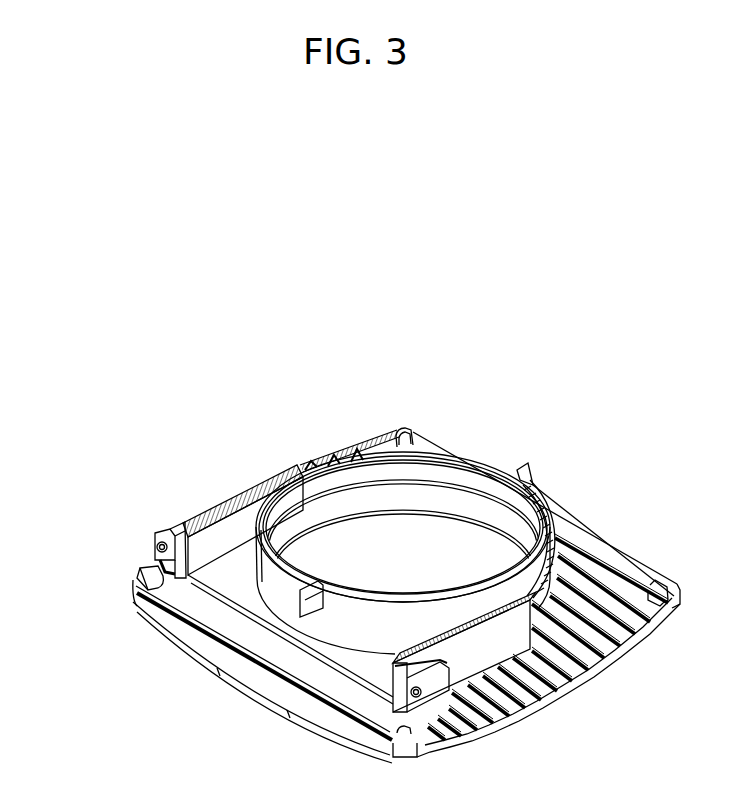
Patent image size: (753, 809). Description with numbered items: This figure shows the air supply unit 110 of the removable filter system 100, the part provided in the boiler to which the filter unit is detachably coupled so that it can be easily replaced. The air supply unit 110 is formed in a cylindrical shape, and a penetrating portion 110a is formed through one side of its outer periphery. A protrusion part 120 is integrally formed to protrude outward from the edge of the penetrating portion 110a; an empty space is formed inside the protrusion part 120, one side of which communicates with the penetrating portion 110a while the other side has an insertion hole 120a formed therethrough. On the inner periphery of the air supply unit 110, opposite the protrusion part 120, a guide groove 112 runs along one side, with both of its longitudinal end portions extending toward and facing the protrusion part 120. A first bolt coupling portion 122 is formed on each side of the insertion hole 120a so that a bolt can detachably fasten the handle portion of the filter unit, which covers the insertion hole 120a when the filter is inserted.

The removable filter system 100 is at (285, 332).
The air supply unit 110 is at (392, 538).
The penetrating portion 110a is at (292, 633).
The guide groove 112 is at (298, 498).
The protrusion part 120 is at (146, 574).
The insertion hole 120a is at (343, 672).
The first bolt coupling portion 122 is at (158, 533).